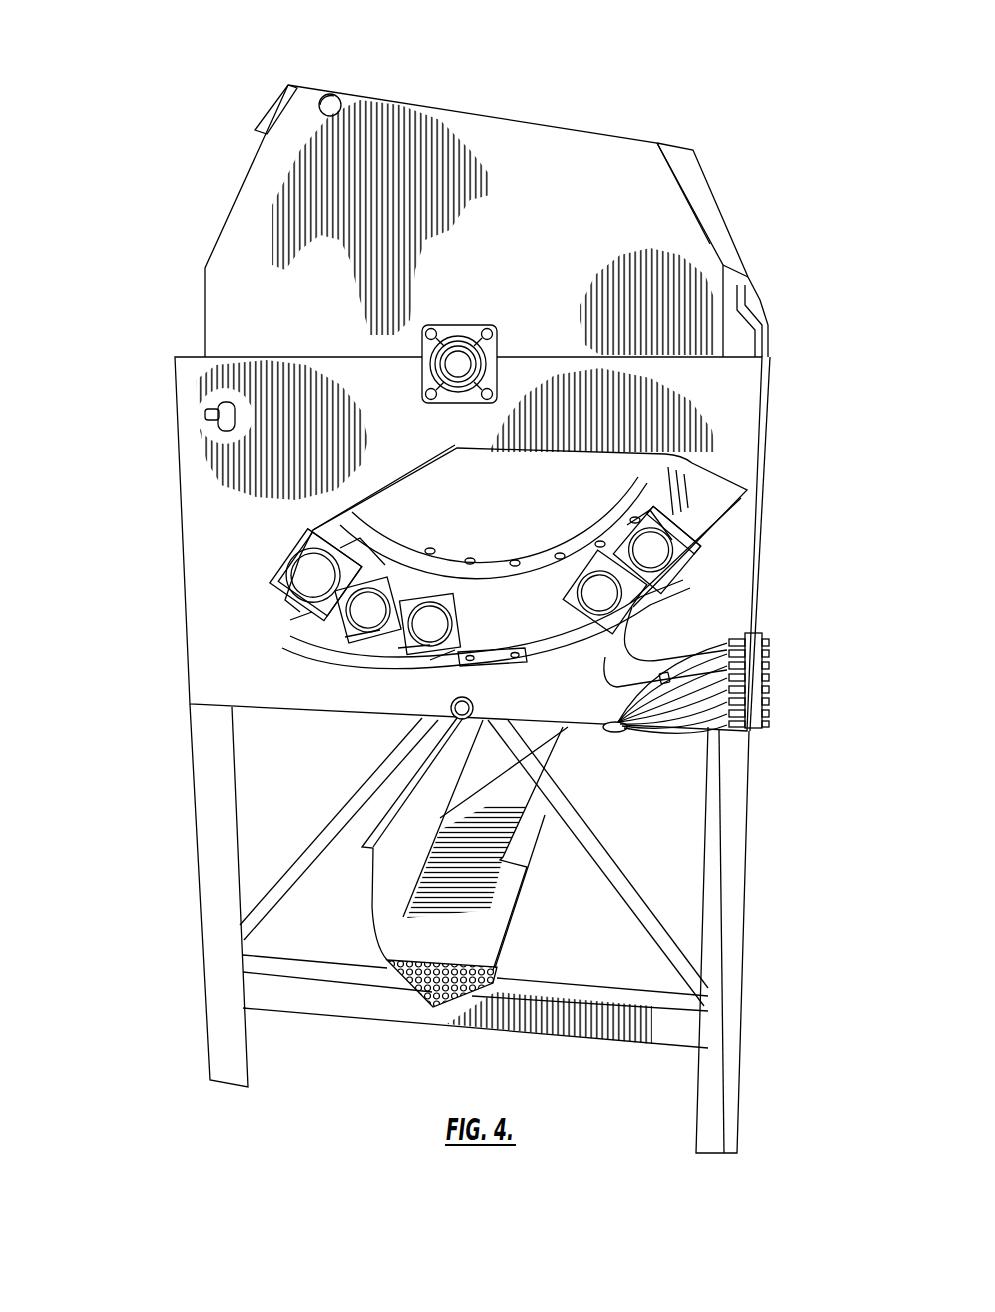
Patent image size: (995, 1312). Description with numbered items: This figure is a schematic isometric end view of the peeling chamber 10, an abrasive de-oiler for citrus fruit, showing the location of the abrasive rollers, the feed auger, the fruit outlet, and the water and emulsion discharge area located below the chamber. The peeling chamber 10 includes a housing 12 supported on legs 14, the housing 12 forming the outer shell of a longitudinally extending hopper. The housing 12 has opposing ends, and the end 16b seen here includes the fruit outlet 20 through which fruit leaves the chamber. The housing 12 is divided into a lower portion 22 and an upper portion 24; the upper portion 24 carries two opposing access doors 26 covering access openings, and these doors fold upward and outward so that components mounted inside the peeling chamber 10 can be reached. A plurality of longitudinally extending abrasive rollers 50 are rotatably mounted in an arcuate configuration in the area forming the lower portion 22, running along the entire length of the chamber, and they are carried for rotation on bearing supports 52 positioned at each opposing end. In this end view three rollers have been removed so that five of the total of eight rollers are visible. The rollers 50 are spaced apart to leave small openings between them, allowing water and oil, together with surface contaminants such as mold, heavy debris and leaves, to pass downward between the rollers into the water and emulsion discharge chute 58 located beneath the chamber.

The peeling chamber 10 is at (808, 467).
The housing 12 is at (707, 280).
The legs 14 is at (740, 815).
The opposing end 16b is at (258, 233).
The fruit outlet 20 is at (703, 493).
The lower portion 22 is at (297, 520).
The upper portion 24 is at (677, 217).
The access doors 26 is at (282, 82).
The abrasive rollers 50 is at (360, 558).
The bearing supports 52 is at (360, 627).
The water and emulsion discharge chute 58 is at (520, 910).